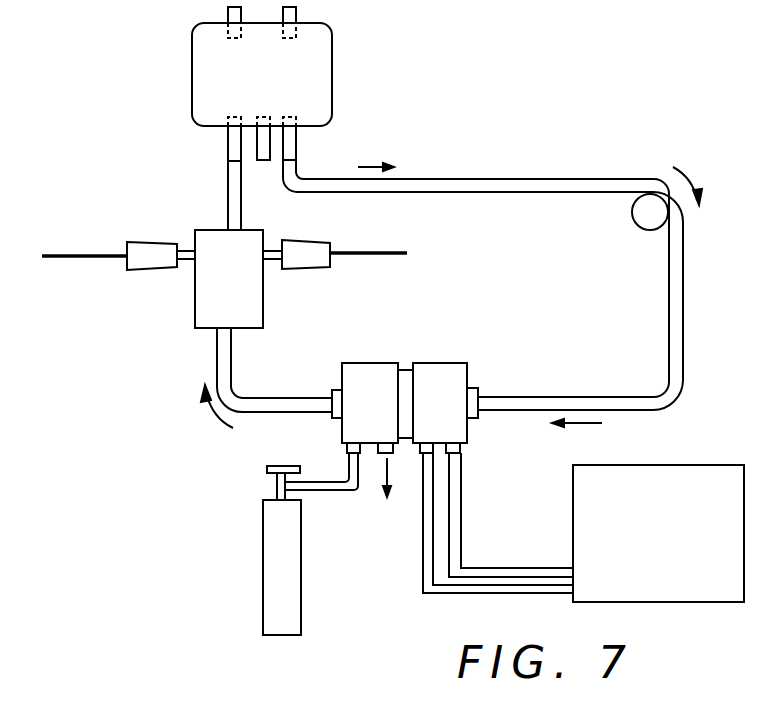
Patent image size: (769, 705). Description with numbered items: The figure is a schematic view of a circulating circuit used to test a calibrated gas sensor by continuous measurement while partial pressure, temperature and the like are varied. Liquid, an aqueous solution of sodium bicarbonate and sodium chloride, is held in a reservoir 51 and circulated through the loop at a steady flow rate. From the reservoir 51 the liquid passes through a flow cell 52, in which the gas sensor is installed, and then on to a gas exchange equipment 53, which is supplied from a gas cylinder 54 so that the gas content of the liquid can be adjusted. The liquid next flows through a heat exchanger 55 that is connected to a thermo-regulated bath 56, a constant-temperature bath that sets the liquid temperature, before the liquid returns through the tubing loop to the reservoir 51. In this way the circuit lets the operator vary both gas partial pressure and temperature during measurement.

The reservoir 51 is at (332, 87).
The flow cell 52 is at (265, 297).
The gas exchange equipment 53 is at (393, 363).
The gas cylinder 54 is at (302, 563).
The heat exchanger 55 is at (468, 375).
The thermo-regulated bath 56 is at (722, 463).